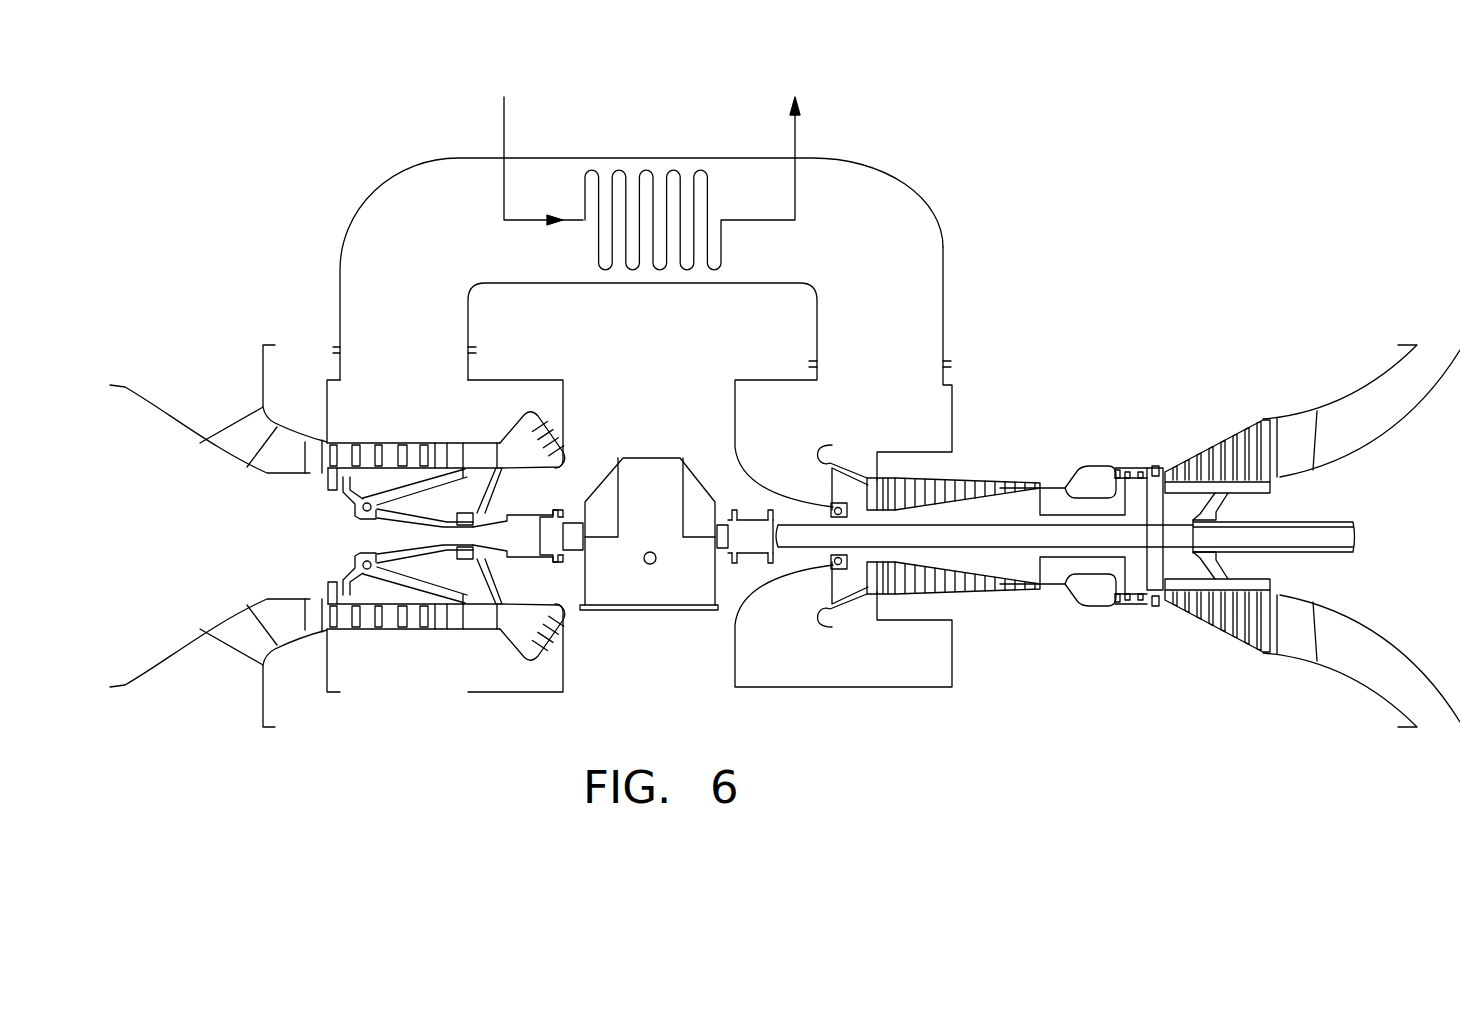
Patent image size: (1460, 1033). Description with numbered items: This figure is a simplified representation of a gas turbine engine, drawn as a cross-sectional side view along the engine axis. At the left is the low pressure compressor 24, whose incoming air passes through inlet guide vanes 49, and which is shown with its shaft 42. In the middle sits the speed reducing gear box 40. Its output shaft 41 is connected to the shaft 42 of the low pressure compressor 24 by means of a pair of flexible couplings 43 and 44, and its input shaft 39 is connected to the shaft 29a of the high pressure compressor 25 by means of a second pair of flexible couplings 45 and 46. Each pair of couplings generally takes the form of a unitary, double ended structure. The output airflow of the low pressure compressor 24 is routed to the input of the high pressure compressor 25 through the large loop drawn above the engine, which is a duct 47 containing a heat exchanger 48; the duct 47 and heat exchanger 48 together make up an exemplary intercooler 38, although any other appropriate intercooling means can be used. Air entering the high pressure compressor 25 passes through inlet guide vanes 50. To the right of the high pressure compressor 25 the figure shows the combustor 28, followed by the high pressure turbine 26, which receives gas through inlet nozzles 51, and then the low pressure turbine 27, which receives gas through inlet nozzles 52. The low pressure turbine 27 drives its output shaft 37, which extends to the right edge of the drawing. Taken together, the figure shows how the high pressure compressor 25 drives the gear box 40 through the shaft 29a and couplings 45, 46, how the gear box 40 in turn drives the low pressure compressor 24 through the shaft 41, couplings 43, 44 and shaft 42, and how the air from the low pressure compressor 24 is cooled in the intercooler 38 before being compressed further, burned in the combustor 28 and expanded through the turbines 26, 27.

The low pressure compressor 24 is at (343, 490).
The high pressure compressor 25 is at (940, 487).
The high pressure turbine 26 is at (1135, 470).
The low pressure turbine 27 is at (1247, 437).
The combustor 28 is at (1082, 480).
The shaft of the high pressure compressor 29a is at (800, 548).
The output shaft 37 is at (1297, 515).
The intercooler 38 is at (880, 168).
The input shaft 39 is at (721, 525).
The speed reducing gear box 40 is at (603, 598).
The output shaft 41 is at (568, 530).
The shaft 42 is at (457, 528).
The flexible coupling 43 is at (513, 513).
The flexible coupling 44 is at (557, 562).
The flexible coupling 45 is at (733, 562).
The flexible coupling 46 is at (775, 508).
The duct 47 is at (945, 257).
The heat exchanger 48 is at (712, 188).
The inlet guide vanes 49 is at (314, 446).
The inlet guide vanes 50 is at (878, 497).
The inlet nozzles 51 is at (1122, 470).
The inlet nozzles 52 is at (1157, 470).